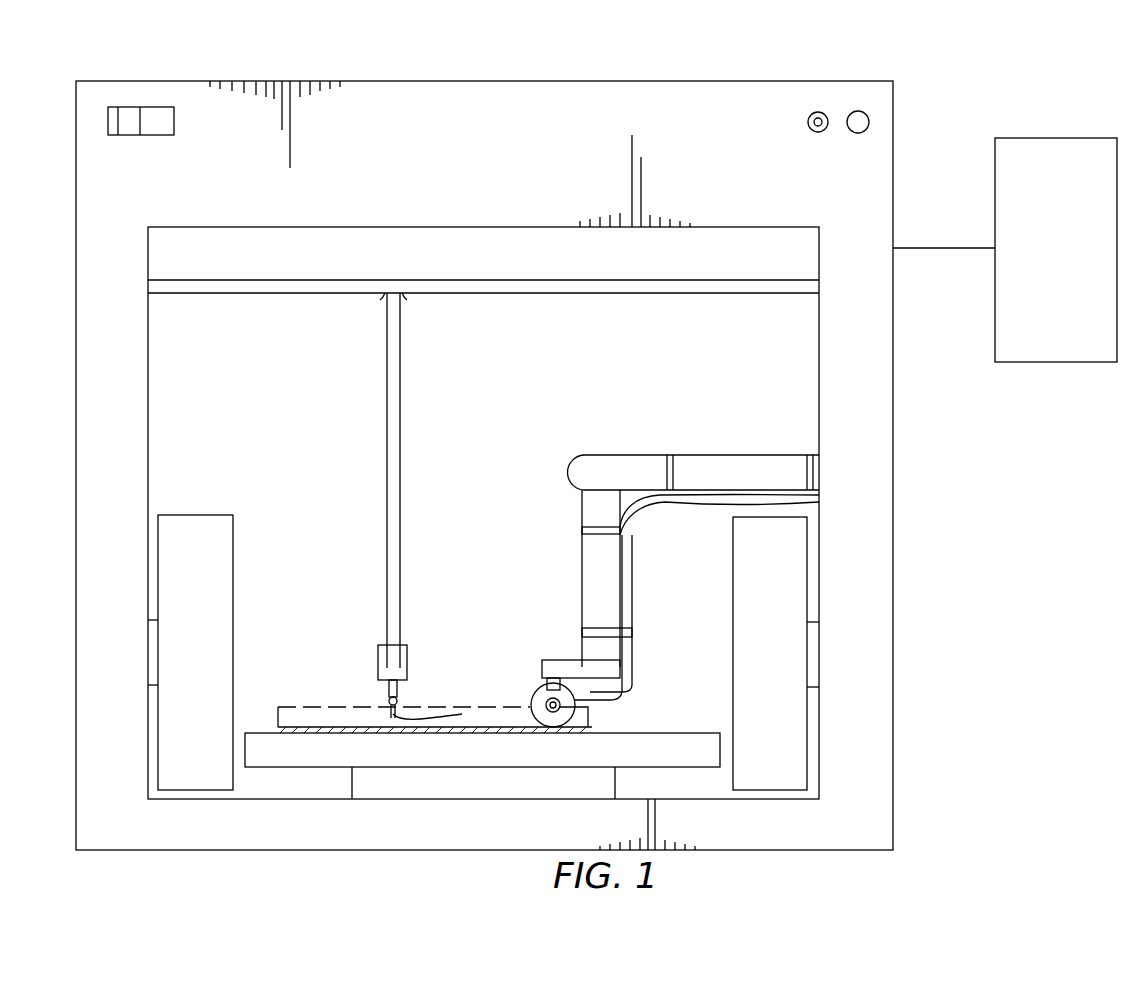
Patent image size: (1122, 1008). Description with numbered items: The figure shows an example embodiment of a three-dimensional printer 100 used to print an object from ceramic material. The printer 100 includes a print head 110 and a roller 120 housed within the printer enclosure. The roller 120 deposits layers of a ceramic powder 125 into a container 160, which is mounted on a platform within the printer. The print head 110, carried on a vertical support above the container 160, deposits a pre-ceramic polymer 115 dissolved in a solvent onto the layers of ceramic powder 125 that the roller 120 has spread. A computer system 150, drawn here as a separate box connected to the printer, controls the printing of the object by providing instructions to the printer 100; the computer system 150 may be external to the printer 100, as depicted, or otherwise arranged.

The 3-D printer 100 is at (600, 64).
The print head 110 is at (378, 656).
The pre-ceramic polymer 115 is at (460, 714).
The roller 120 is at (535, 690).
The ceramic powder 125 is at (592, 726).
The computer system 150 is at (1005, 250).
The container 160 is at (278, 720).